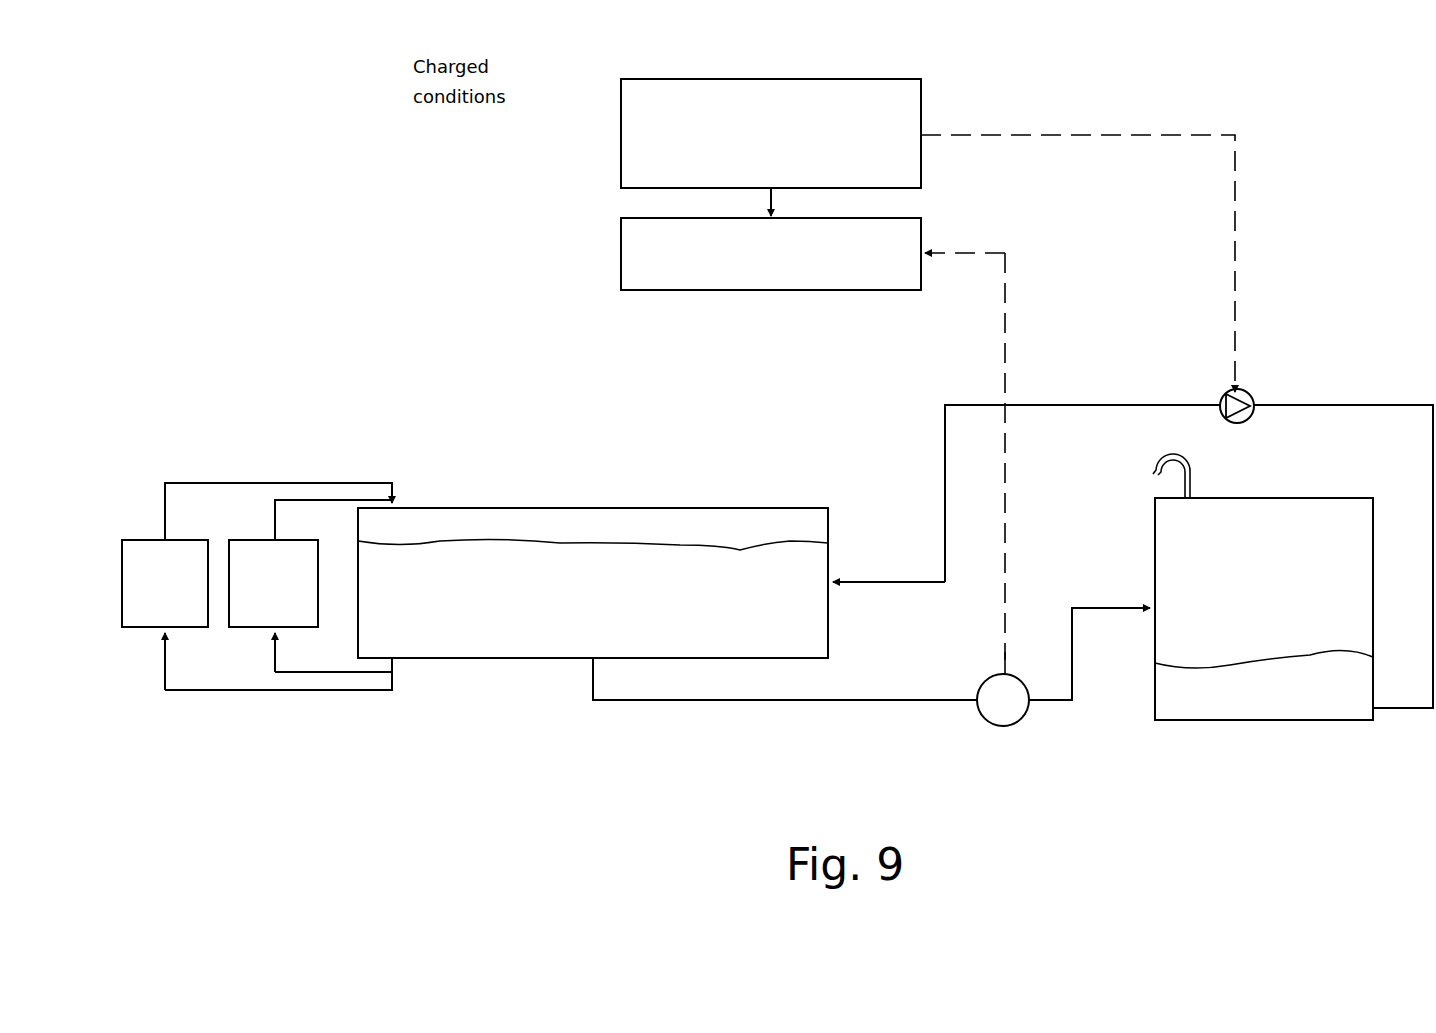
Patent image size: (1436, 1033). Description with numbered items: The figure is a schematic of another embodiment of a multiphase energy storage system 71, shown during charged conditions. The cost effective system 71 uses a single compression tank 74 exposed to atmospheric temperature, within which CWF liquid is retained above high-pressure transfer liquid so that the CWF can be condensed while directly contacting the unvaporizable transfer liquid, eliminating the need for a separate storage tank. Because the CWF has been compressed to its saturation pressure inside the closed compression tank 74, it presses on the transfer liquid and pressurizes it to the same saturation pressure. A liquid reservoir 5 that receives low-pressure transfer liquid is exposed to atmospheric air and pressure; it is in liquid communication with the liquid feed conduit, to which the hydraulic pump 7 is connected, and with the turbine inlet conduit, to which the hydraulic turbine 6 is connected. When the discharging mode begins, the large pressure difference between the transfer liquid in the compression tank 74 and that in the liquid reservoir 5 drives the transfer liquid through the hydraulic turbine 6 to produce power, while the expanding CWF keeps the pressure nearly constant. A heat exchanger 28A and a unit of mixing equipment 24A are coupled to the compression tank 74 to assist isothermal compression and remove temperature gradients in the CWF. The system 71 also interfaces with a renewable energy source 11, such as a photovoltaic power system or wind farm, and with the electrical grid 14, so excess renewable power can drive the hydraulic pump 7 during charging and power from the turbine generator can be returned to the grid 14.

The renewable energy source 11 is at (618, 155).
The electrical grid 14 is at (618, 262).
The multiphase energy storage system 71 is at (1022, 88).
The hydraulic pump 7 is at (1250, 390).
The liquid reservoir 5 is at (1318, 486).
The hydraulic turbine 6 is at (978, 678).
The compression tank 74 is at (630, 502).
The heat exchanger 28A is at (126, 631).
The unit of mixing equipment 24A is at (242, 631).